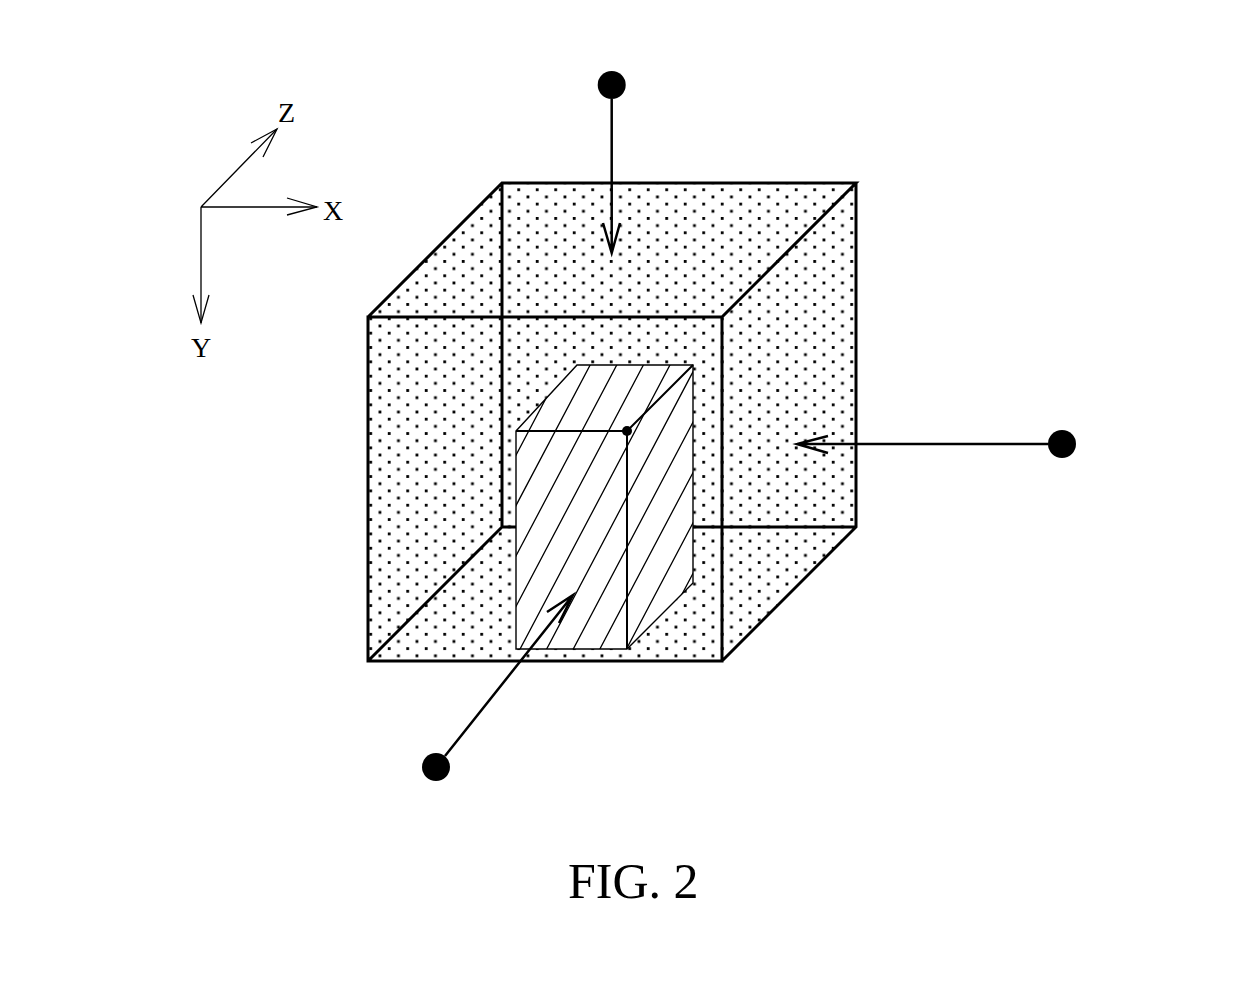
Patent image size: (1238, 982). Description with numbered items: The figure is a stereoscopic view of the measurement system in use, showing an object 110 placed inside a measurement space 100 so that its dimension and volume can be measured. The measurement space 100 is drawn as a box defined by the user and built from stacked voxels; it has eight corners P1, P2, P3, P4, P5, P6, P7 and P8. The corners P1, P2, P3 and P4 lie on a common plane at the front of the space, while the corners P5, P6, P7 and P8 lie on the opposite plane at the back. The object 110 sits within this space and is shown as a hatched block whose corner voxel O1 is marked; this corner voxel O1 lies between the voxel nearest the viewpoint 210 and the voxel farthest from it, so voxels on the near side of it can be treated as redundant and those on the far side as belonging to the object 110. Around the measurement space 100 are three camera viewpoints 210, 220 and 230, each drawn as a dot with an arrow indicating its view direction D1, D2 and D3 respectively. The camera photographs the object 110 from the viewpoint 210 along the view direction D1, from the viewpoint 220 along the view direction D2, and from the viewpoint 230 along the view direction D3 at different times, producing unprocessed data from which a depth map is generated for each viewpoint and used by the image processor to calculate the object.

The measurement space 100 is at (787, 193).
The object 110 is at (662, 583).
The viewpoint 210 is at (422, 763).
The viewpoint 220 is at (1073, 433).
The viewpoint 230 is at (617, 72).
The view direction D1 is at (490, 700).
The view direction D2 is at (957, 442).
The view direction D3 is at (613, 143).
The corner voxel O1 is at (627, 431).
The corner P1 is at (368, 317).
The corner P2 is at (368, 661).
The corner P3 is at (722, 661).
The corner P4 is at (722, 317).
The corner P5 is at (502, 182).
The corner P6 is at (502, 527).
The corner P7 is at (856, 527).
The corner P8 is at (856, 183).